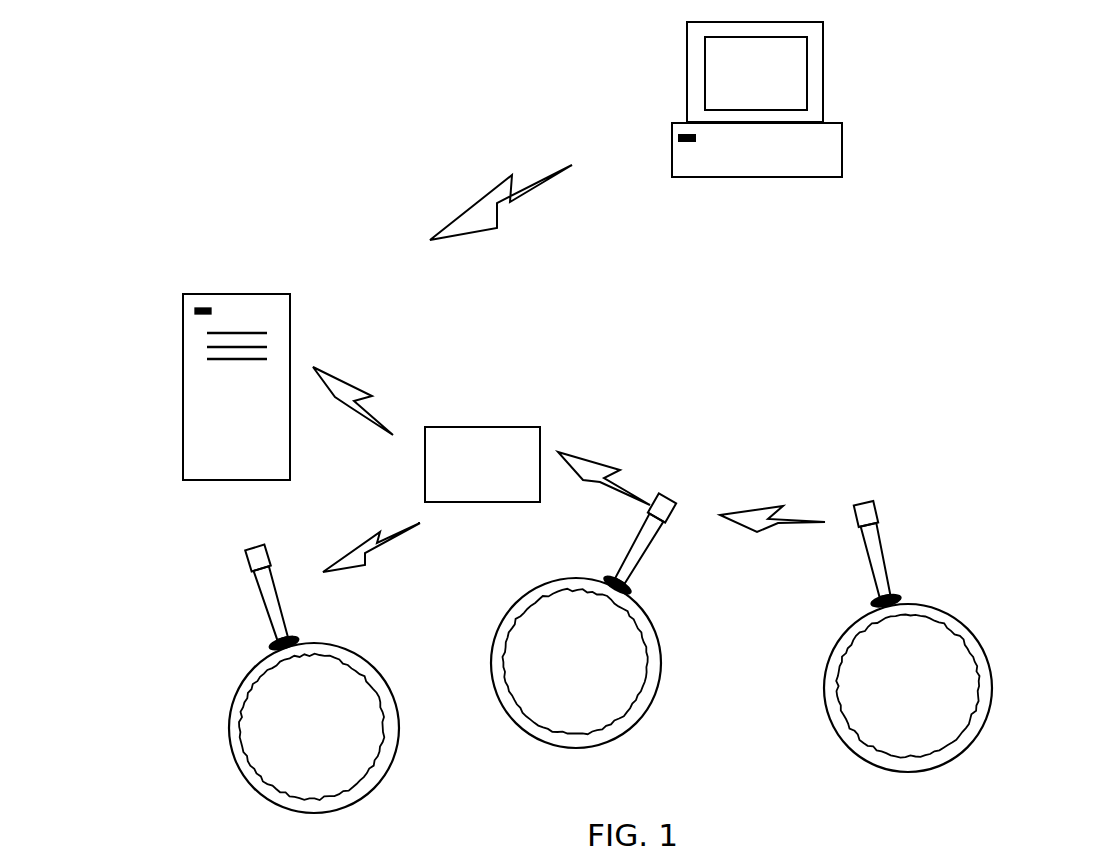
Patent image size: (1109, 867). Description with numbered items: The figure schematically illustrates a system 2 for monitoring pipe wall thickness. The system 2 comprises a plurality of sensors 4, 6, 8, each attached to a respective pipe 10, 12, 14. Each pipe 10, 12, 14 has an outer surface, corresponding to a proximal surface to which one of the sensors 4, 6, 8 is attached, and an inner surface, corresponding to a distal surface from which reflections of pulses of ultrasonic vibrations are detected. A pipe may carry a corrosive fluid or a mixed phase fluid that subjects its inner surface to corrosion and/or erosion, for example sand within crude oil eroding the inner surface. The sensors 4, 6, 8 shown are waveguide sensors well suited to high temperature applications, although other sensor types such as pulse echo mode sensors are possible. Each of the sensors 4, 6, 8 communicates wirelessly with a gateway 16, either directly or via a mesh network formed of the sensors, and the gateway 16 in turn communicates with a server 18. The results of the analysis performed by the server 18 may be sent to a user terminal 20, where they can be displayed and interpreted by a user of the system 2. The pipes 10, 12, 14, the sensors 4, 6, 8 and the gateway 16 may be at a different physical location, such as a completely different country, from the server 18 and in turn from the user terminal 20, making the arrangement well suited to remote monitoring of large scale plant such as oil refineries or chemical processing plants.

The system 2 is at (1040, 96).
The sensor 4 is at (244, 622).
The sensor 6 is at (616, 557).
The sensor 8 is at (861, 582).
The pipe 10 is at (383, 673).
The pipe 12 is at (655, 633).
The pipe 14 is at (967, 627).
The gateway 16 is at (478, 427).
The server 18 is at (290, 322).
The user terminal 20 is at (843, 137).